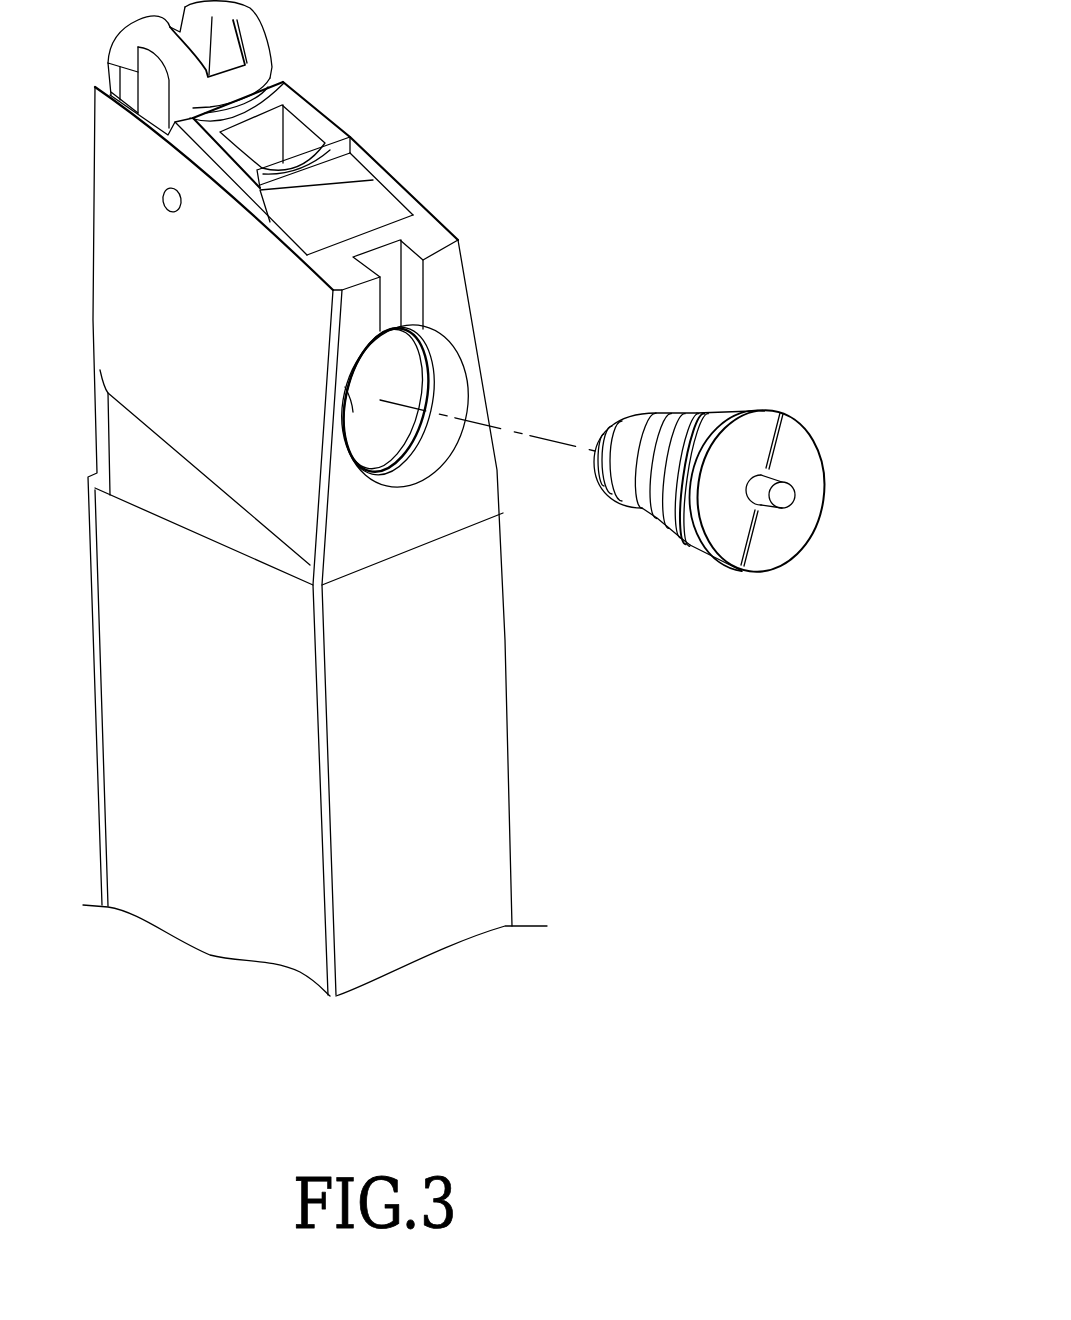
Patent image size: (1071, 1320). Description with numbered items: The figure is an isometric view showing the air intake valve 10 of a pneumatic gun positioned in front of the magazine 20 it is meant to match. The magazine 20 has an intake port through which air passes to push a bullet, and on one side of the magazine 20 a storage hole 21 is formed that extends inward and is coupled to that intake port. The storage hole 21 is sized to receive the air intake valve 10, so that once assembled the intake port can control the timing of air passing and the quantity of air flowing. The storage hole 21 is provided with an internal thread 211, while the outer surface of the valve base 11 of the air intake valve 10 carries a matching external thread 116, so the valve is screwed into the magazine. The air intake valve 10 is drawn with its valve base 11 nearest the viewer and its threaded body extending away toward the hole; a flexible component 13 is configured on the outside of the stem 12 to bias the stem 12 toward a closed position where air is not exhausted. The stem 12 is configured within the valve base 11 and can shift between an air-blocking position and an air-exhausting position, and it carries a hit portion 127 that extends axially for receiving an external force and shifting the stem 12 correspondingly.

The air intake valve 10 is at (780, 473).
The valve base 11 is at (765, 406).
The external thread 116 is at (707, 414).
The stem 12 is at (774, 518).
The hit portion 127 is at (783, 498).
The flexible component 13 is at (611, 503).
The magazine 20 is at (361, 498).
The storage hole 21 is at (448, 420).
The internal thread 211 is at (412, 443).